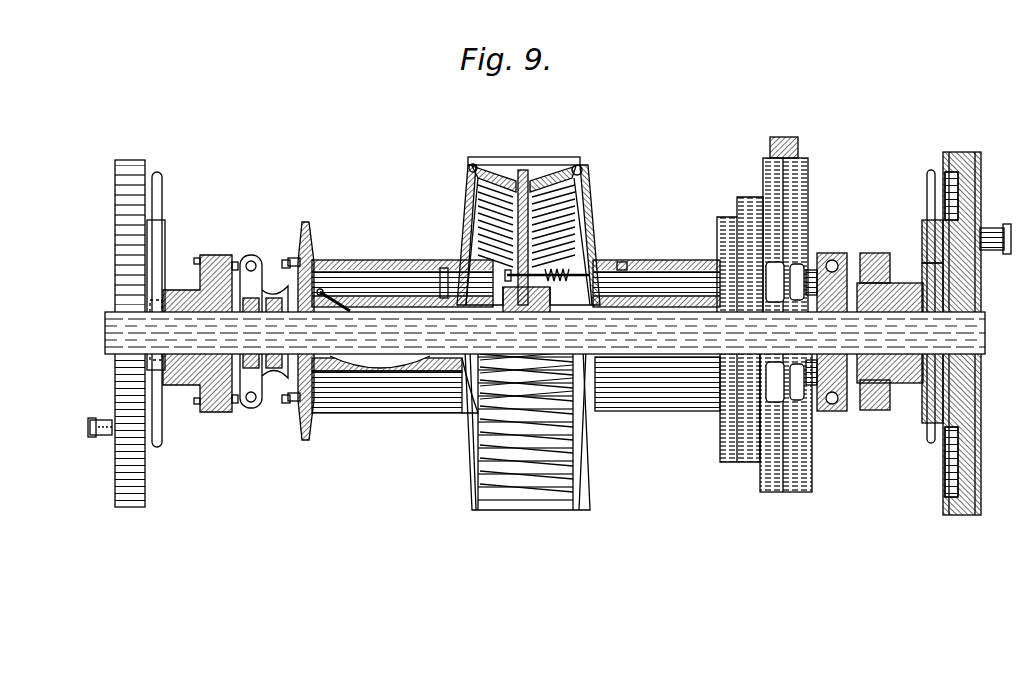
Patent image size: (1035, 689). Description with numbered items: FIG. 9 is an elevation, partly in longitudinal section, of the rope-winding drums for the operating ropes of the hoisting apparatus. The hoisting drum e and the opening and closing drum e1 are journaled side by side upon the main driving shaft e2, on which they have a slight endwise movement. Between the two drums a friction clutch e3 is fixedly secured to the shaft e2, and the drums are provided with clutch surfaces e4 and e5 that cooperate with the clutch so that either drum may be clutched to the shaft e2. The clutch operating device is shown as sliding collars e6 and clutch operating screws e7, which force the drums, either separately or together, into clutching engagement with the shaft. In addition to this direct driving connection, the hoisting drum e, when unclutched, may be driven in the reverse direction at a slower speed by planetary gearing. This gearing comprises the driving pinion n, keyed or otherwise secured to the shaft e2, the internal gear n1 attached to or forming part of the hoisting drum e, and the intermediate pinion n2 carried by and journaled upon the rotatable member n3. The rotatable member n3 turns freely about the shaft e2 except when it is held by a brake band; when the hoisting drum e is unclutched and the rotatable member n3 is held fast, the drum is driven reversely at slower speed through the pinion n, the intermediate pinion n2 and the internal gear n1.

The opening and closing drum e1 is at (412, 262).
The main driving shaft e2 is at (958, 334).
The friction clutch e3 is at (522, 182).
The clutch surface e4 is at (583, 172).
The clutch surface e5 is at (468, 169).
The sliding collar e6 is at (256, 296).
The clutch operating screw e7 is at (193, 277).
The hoisting drum e is at (620, 262).
The driving pinion n is at (805, 272).
The internal gear n1 is at (740, 215).
The intermediate pinion n2 is at (806, 215).
The rotatable member n3 is at (800, 178).